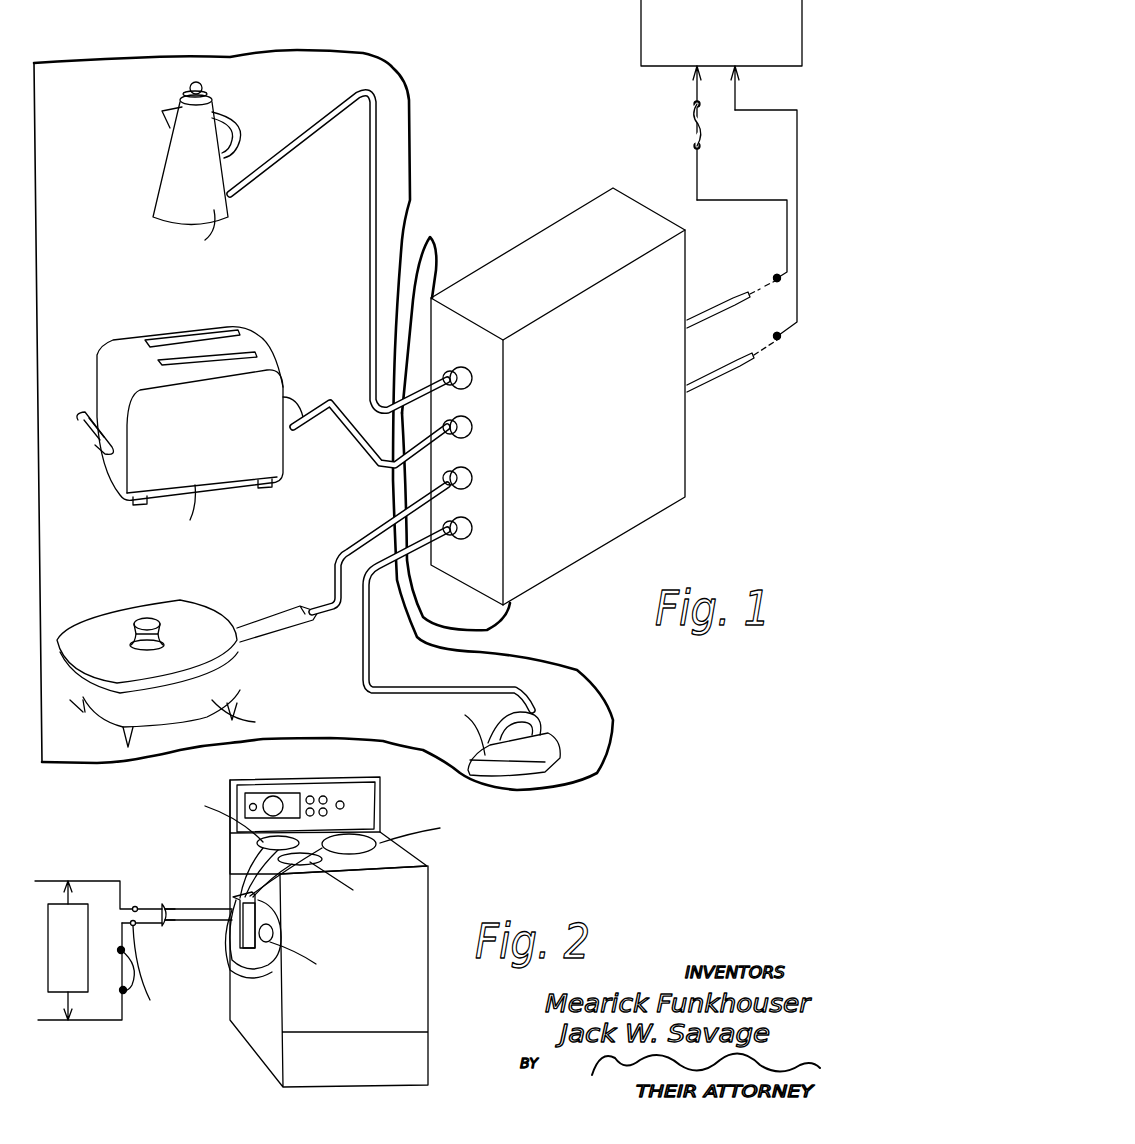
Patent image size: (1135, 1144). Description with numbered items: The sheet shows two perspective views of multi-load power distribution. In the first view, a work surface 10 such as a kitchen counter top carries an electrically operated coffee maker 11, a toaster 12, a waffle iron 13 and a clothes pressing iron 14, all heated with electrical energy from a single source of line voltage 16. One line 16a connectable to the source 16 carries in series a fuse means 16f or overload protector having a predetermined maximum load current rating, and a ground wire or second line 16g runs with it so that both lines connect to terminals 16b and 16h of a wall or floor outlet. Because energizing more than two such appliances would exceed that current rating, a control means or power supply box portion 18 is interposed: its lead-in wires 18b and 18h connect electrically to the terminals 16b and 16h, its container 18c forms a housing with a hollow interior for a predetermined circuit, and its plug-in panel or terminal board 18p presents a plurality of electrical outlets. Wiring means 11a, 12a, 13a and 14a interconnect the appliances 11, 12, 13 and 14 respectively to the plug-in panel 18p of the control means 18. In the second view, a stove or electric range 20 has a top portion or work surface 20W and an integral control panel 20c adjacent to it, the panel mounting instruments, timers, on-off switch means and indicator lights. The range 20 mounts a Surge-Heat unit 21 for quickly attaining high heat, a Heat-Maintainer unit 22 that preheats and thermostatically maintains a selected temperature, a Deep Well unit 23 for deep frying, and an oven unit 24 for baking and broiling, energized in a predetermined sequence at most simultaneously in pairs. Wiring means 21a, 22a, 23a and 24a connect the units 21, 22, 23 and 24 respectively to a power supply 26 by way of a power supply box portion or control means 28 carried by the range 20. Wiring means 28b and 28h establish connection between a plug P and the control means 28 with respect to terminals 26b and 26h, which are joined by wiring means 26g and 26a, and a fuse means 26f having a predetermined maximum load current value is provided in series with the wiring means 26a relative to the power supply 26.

In FIG. 1, the work surface 10 is at (397, 147).
In FIG. 1, the coffee maker 11 is at (178, 100).
In FIG. 1, the wiring means 11a is at (370, 178).
In FIG. 1, the toaster 12 is at (117, 352).
In FIG. 1, the wiring means 12a is at (356, 440).
In FIG. 1, the waffle iron 13 is at (97, 630).
In FIG. 1, the wiring means 13a is at (330, 560).
In FIG. 1, the clothes pressing iron 14 is at (555, 745).
In FIG. 1, the wiring means 14a is at (364, 648).
In FIG. 1, the source of line voltage 16 is at (641, 34).
In FIG. 1, the line 16a is at (697, 92).
In FIG. 1, the terminal 16b is at (777, 275).
In FIG. 1, the fuse means 16f is at (697, 125).
In FIG. 1, the ground wire 16g is at (797, 145).
In FIG. 1, the terminal 16h is at (779, 340).
In FIG. 1, the control means 18 is at (558, 380).
In FIG. 1, the lead-in wire 18b is at (714, 310).
In FIG. 1, the container 18c is at (508, 265).
In FIG. 1, the lead-in wire 18h is at (718, 374).
In FIG. 1, the plug-in panel 18p is at (505, 400).
In FIG. 2, the electric range 20 is at (412, 1008).
In FIG. 2, the control panel 20c is at (335, 797).
In FIG. 2, the work surface 20W is at (430, 867).
In FIG. 2, the Surge-Heat unit 21 is at (330, 838).
In FIG. 2, the wiring means 21a is at (260, 862).
In FIG. 2, the Heat-Maintainer unit 22 is at (370, 838).
In FIG. 2, the wiring means 22a is at (377, 857).
In FIG. 2, the Deep Well unit 23 is at (310, 863).
In FIG. 2, the wiring means 23a is at (285, 868).
In FIG. 2, the oven unit 24 is at (262, 968).
In FIG. 2, the wiring means 24a is at (273, 930).
In FIG. 2, the power supply 26 is at (52, 904).
In FIG. 2, the wiring means 26a is at (150, 1000).
In FIG. 2, the terminal 26b is at (133, 958).
In FIG. 2, the fuse means 26f is at (128, 992).
In FIG. 2, the wiring means 26g is at (103, 881).
In FIG. 2, the terminal 26h is at (135, 905).
In FIG. 2, the control means 28 is at (236, 906).
In FIG. 2, the wiring means 28b is at (177, 925).
In FIG. 2, the wiring means 28h is at (172, 902).
In FIG. 2, the plug P is at (175, 928).